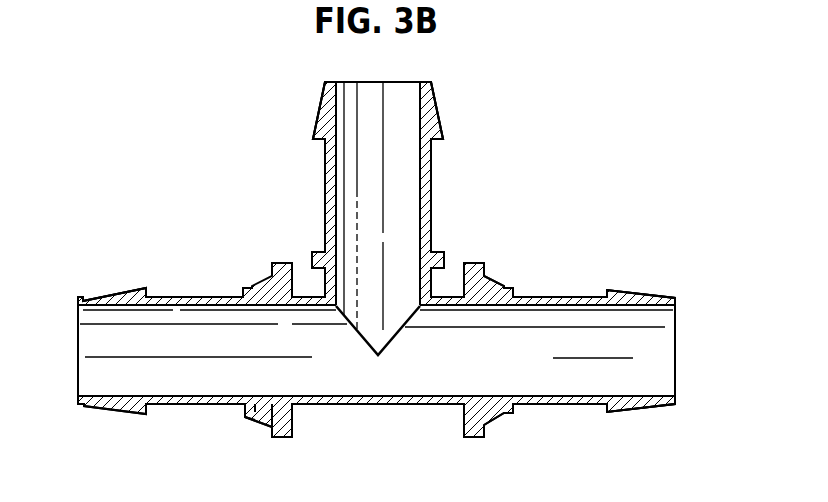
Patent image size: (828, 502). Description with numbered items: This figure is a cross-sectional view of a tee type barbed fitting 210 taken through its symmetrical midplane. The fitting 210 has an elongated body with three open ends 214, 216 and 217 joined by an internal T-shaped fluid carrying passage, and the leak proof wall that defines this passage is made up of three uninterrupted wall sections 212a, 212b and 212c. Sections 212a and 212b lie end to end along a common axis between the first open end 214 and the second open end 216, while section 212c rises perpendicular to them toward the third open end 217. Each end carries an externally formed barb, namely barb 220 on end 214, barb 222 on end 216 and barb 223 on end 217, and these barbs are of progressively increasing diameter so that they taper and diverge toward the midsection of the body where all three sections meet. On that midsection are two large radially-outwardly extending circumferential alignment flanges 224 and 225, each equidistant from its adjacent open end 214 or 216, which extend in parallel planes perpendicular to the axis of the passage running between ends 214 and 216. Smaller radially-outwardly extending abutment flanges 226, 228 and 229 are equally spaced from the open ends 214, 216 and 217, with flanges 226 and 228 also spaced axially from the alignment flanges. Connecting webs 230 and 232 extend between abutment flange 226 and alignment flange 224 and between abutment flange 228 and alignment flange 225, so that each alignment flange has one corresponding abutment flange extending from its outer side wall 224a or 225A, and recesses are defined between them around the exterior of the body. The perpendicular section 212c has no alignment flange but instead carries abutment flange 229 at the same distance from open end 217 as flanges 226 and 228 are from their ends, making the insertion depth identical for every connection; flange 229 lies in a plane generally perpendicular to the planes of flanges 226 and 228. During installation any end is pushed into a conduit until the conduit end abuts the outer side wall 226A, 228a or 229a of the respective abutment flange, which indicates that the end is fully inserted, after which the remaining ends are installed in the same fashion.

The tee fitting 210 is at (547, 114).
The wall section 212a is at (188, 296).
The wall section 212b is at (584, 296).
The wall section 212c is at (432, 171).
The open end 214 is at (90, 405).
The open end 216 is at (647, 294).
The open end 217 is at (320, 117).
The barb 220 is at (132, 291).
The barb 222 is at (625, 410).
The barb 223 is at (441, 132).
The alignment flange 224 is at (292, 420).
The outer side wall 224a is at (274, 428).
The alignment flange 225 is at (466, 413).
The outer side wall 225A is at (485, 433).
The abutment flange 226 is at (248, 421).
The outer side wall 226A is at (243, 414).
The abutment flange 228 is at (510, 290).
The outer side wall 228a is at (511, 414).
The abutment flange 229 is at (438, 251).
The outer side wall 229a is at (313, 252).
The connecting web 230 is at (263, 416).
The connecting web 232 is at (492, 280).